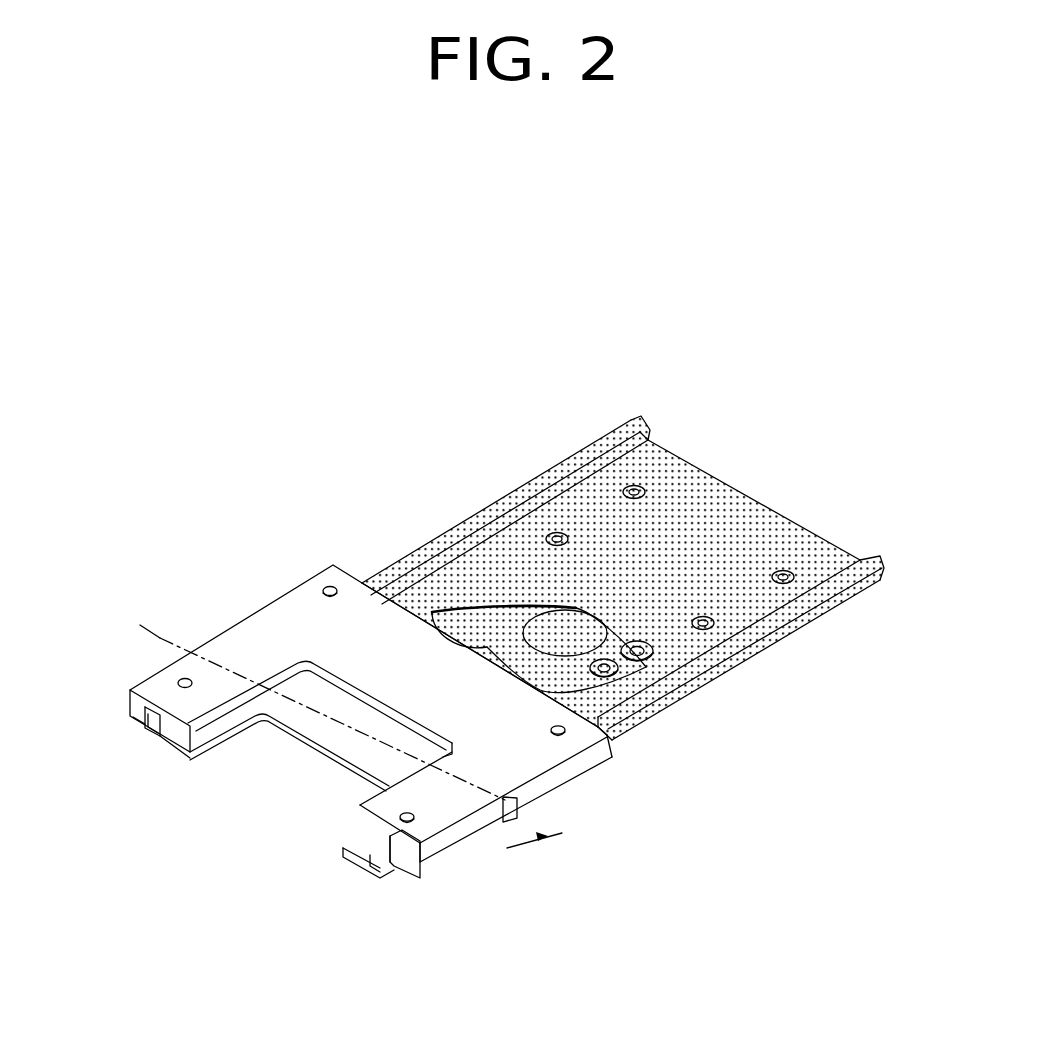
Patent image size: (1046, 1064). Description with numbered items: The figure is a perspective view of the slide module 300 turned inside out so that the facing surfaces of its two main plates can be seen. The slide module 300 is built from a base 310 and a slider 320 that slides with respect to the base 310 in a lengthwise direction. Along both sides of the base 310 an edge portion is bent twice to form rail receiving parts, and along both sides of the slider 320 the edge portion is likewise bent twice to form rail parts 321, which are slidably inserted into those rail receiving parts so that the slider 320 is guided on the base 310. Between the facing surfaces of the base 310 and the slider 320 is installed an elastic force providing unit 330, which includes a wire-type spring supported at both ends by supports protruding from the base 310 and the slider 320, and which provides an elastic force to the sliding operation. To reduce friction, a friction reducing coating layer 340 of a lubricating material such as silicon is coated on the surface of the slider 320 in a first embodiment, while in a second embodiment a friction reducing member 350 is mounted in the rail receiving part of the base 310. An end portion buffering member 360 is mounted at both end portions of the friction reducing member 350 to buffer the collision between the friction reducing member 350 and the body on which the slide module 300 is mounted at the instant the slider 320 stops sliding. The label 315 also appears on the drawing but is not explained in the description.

The slide module 300 is at (272, 396).
The base 310 is at (287, 622).
The fixing clips 315 is at (193, 682).
The slider 320 is at (590, 427).
The rail parts 321 is at (643, 428).
The elastic force providing unit 330 is at (493, 600).
The friction reducing coating layer 340 is at (773, 553).
The friction reducing member 350 is at (517, 798).
The end portion buffering member 360 is at (422, 862).